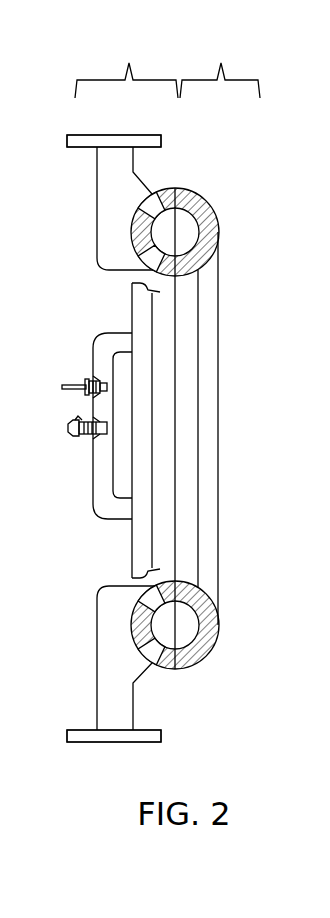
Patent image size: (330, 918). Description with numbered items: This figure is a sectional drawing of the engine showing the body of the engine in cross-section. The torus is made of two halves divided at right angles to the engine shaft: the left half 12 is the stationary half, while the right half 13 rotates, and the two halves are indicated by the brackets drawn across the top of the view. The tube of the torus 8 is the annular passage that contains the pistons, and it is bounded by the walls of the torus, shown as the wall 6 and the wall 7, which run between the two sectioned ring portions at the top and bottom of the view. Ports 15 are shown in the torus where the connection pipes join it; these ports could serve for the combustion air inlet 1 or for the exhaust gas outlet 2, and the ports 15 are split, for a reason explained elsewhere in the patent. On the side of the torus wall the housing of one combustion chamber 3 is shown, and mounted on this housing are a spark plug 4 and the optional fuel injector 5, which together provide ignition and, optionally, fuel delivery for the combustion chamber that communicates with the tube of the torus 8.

The combustion air inlet 1 is at (97, 188).
The exhaust gas outlet 2 is at (114, 438).
The combustion chamber housing 3 is at (93, 464).
The spark plug 4 is at (83, 383).
The fuel injector 5 is at (75, 420).
The torus wall 6 is at (131, 554).
The torus wall 7 is at (219, 350).
The torus tube 8 is at (203, 638).
The stationary half of torus 12 is at (126, 69).
The rotating half of torus 13 is at (220, 69).
The ports 15 is at (138, 210).